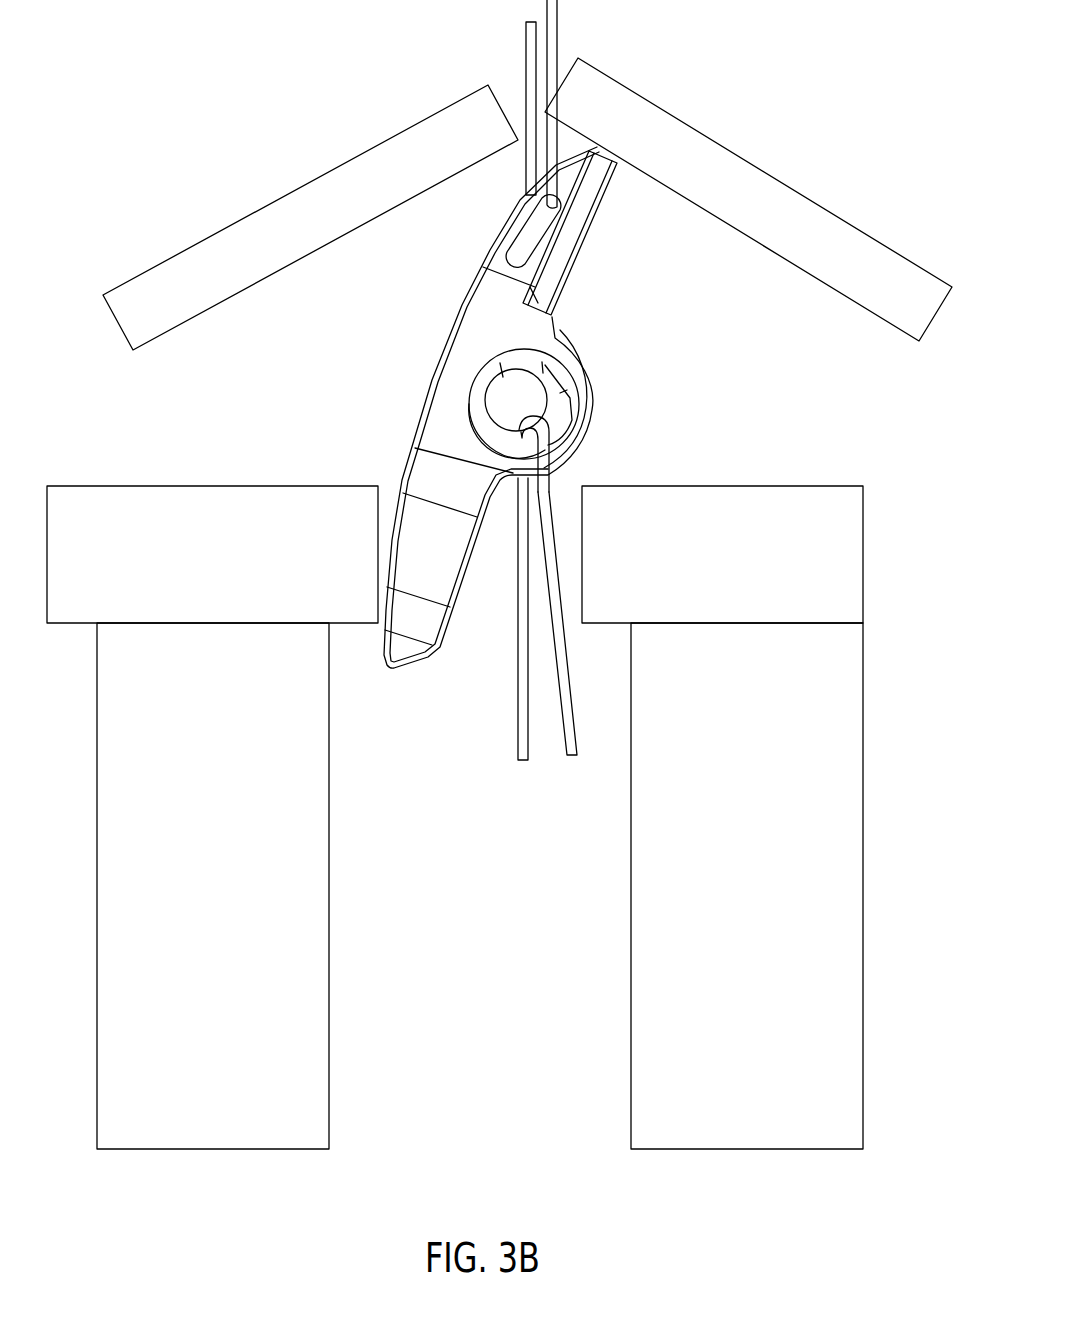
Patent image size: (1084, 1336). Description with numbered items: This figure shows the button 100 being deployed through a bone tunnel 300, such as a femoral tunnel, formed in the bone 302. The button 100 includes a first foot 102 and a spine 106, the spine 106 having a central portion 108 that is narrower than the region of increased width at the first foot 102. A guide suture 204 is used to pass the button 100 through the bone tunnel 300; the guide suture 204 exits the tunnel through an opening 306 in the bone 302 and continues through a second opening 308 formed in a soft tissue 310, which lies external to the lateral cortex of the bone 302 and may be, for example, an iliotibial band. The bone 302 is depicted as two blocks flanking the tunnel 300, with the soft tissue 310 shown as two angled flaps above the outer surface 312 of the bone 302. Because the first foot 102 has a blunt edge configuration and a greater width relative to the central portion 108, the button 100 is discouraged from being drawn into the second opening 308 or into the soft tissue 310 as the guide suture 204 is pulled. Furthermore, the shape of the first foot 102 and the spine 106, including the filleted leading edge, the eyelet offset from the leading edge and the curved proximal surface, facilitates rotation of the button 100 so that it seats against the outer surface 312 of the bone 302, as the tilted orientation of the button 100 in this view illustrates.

The button 100 is at (510, 407).
The first foot 102 is at (598, 228).
The spine 106 is at (456, 312).
The central portion 108 is at (528, 327).
The guide suture 204 is at (557, 28).
The bone tunnel 300 is at (484, 827).
The bone 302 is at (863, 816).
The opening 306 is at (388, 473).
The second opening 308 is at (512, 87).
The soft tissue 310 is at (765, 172).
The outer surface 312 is at (721, 486).